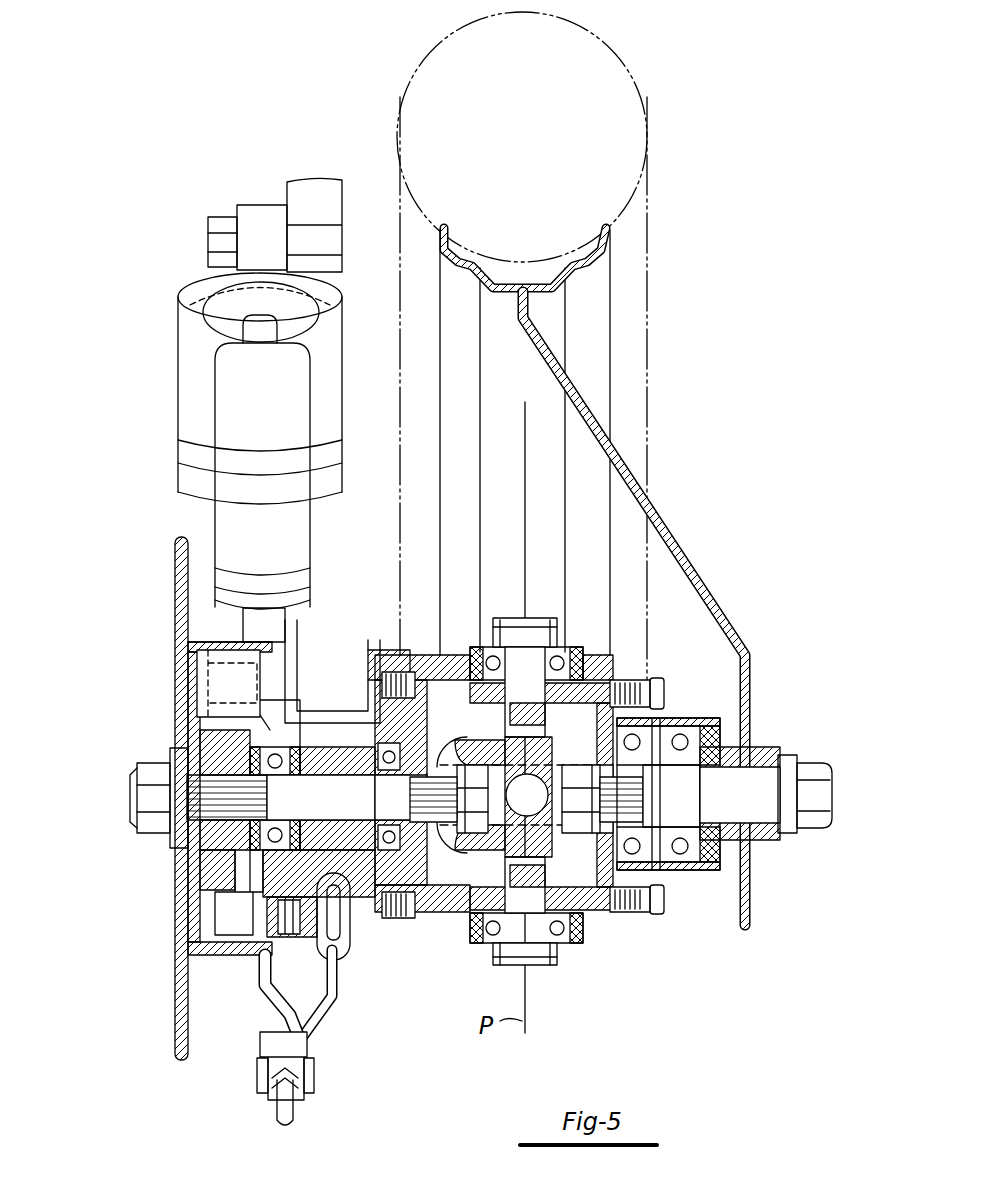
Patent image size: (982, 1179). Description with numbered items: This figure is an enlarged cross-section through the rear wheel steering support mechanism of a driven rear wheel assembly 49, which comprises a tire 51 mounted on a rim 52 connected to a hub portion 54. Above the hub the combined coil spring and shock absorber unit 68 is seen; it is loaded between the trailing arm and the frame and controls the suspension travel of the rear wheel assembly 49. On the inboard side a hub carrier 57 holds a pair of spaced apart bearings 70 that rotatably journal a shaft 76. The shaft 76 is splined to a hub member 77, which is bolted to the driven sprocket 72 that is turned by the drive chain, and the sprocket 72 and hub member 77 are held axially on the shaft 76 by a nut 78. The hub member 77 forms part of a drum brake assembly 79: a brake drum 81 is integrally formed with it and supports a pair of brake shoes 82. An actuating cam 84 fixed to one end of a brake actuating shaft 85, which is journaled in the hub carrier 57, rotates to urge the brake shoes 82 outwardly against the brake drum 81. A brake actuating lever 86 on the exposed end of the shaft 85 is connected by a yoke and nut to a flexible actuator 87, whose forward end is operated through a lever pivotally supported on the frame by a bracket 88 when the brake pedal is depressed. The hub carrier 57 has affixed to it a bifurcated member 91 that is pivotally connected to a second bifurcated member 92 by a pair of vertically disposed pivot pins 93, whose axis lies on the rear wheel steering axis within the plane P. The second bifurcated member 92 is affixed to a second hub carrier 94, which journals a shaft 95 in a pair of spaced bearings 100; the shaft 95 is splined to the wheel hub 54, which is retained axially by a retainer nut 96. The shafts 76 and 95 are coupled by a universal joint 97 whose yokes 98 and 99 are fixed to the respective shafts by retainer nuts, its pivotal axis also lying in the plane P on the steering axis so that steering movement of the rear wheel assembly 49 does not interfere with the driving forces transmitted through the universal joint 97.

The rear wheel assembly 49 is at (675, 213).
The tire 51 is at (648, 112).
The rim 52 is at (572, 273).
The hub portion 54 is at (775, 838).
The hub carrier 57 is at (357, 886).
The combined coil spring and shock absorber unit 68 is at (160, 402).
The bearings 70 is at (331, 787).
The driven sprocket 72 is at (185, 665).
The shaft 76 is at (326, 745).
The hub member 77 is at (186, 752).
The nut 78 is at (152, 772).
The drum brake assembly 79 is at (215, 965).
The brake drum 81 is at (205, 645).
The brake shoes 82 is at (235, 860).
The actuating cam 84 is at (225, 915).
The brake actuating shaft 85 is at (268, 878).
The brake actuating lever 86 is at (322, 1027).
The flexible actuator 87 is at (265, 978).
The bracket 88 is at (262, 1048).
The bifurcated member 91 is at (457, 655).
The second bifurcated member 92 is at (594, 672).
The pivot pins 93 is at (560, 965).
The second hub carrier 94 is at (717, 872).
The shaft 95 is at (752, 778).
The retainer nut 96 is at (812, 758).
The universal joint 97 is at (612, 842).
The yoke 98 is at (465, 830).
The yoke 99 is at (558, 772).
The bearings 100 is at (615, 882).